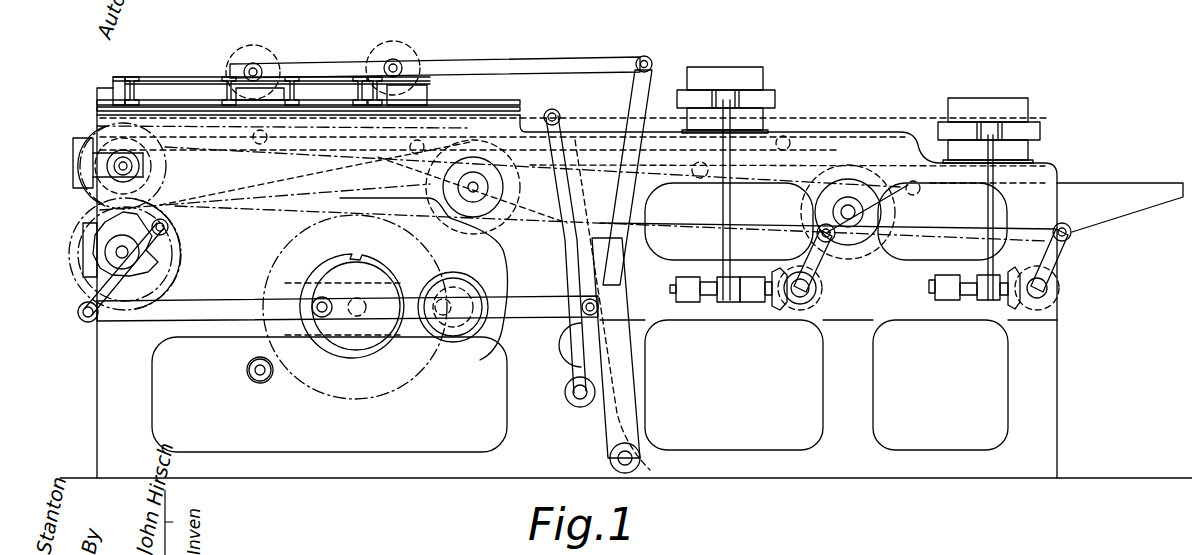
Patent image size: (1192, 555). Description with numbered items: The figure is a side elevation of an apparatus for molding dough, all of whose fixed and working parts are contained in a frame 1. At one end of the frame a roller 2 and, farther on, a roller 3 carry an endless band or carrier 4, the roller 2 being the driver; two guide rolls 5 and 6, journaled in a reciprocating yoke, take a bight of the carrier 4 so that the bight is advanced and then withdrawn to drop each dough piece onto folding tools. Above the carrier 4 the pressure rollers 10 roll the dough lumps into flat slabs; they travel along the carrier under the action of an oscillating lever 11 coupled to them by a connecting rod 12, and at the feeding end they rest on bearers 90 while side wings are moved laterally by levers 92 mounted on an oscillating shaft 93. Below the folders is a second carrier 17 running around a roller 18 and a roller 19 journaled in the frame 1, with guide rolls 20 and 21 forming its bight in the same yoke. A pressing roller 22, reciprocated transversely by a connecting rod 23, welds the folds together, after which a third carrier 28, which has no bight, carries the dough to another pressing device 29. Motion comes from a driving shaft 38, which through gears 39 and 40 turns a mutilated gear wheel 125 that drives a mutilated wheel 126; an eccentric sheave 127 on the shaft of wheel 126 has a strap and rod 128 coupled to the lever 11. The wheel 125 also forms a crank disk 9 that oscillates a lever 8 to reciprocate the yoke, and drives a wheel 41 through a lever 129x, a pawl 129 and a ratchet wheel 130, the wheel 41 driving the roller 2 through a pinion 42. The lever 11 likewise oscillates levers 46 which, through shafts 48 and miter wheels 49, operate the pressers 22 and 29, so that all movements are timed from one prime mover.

The frame 1 is at (633, 283).
The roller 2 is at (165, 160).
The roller 3 is at (421, 146).
The endless band or carrier 4 is at (205, 108).
The guide roll 5 is at (525, 120).
The guide roll 6 is at (262, 144).
The oscillating lever 8 is at (572, 275).
The crank disk 9 is at (385, 268).
The pressure rollers 10 is at (268, 52).
The oscillating lever 11 is at (636, 90).
The connecting rod 12 is at (552, 64).
The second carrier 17 is at (603, 137).
The roller 18 is at (516, 200).
The roller 19 is at (708, 168).
The guide roll 20 is at (790, 143).
The guide roll 21 is at (518, 168).
The pressing roller 22 is at (738, 72).
The connecting rod 23 is at (731, 206).
The third carrier 28 is at (866, 172).
The pressing device 29 is at (975, 108).
The driving shaft 38 is at (260, 376).
The gear 39 is at (246, 369).
The gear 40 is at (405, 385).
The wheel 41 is at (183, 238).
The pinion 42 is at (150, 170).
The levers 46 is at (664, 226).
The shafts 48 is at (670, 290).
The miter wheels 49 is at (780, 312).
The bearers 90 is at (236, 80).
The levers 92 is at (222, 97).
The oscillating shaft 93 is at (157, 77).
The mutilated gear wheel 125 is at (316, 340).
The mutilated wheel 126 is at (428, 290).
The eccentric sheave 127 is at (480, 268).
The strap and rod 128 is at (488, 322).
The pawl 129 is at (172, 212).
The lever 129x is at (68, 318).
The ratchet wheel 130 is at (135, 270).